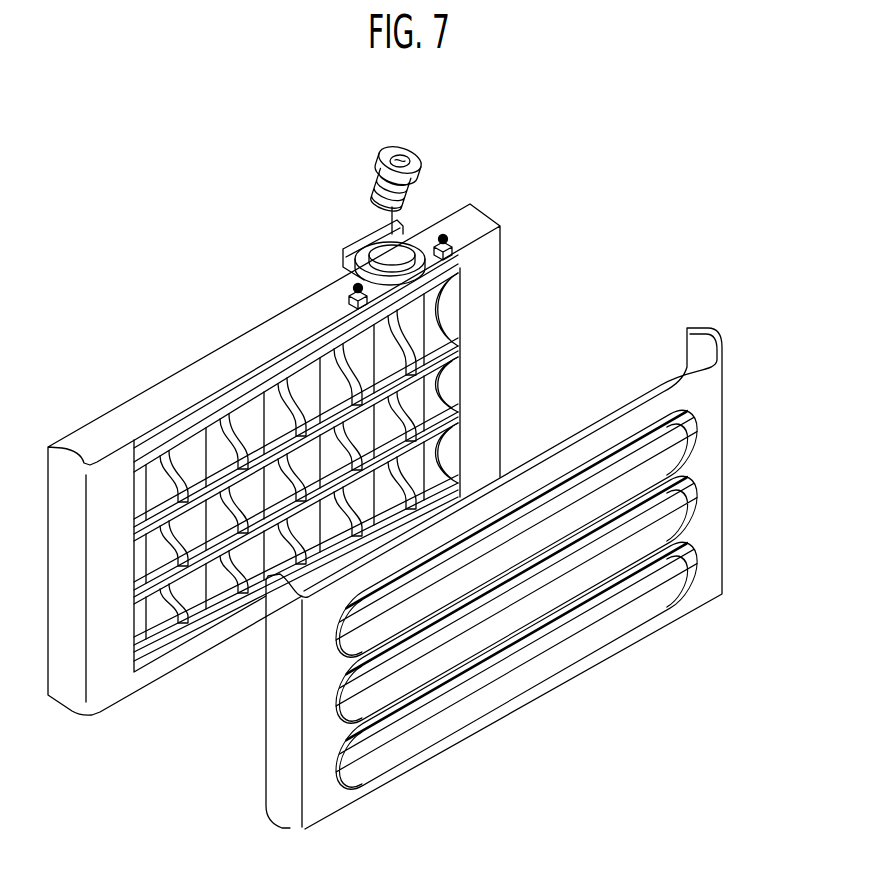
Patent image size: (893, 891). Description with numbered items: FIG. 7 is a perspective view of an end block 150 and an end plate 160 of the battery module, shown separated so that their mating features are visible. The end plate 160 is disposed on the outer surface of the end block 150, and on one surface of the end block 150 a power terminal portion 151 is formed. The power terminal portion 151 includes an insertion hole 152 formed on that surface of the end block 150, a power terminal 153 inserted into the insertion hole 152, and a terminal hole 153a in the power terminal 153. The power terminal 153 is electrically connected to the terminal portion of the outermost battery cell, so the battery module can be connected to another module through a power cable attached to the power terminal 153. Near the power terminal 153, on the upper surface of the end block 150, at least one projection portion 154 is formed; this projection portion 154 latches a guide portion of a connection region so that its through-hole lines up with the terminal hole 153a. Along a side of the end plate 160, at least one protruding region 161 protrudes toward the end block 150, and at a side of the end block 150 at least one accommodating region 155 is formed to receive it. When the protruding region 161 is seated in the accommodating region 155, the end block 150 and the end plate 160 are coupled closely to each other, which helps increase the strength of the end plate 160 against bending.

The end block 150 is at (298, 391).
The power terminal portion 151 is at (361, 176).
The insertion hole 152 is at (376, 246).
The power terminal 153 is at (385, 161).
The terminal hole 153a is at (393, 128).
The projection portion 154 is at (452, 232).
The accommodating region 155 is at (440, 346).
The end plate 160 is at (521, 578).
The protruding region 161 is at (665, 443).